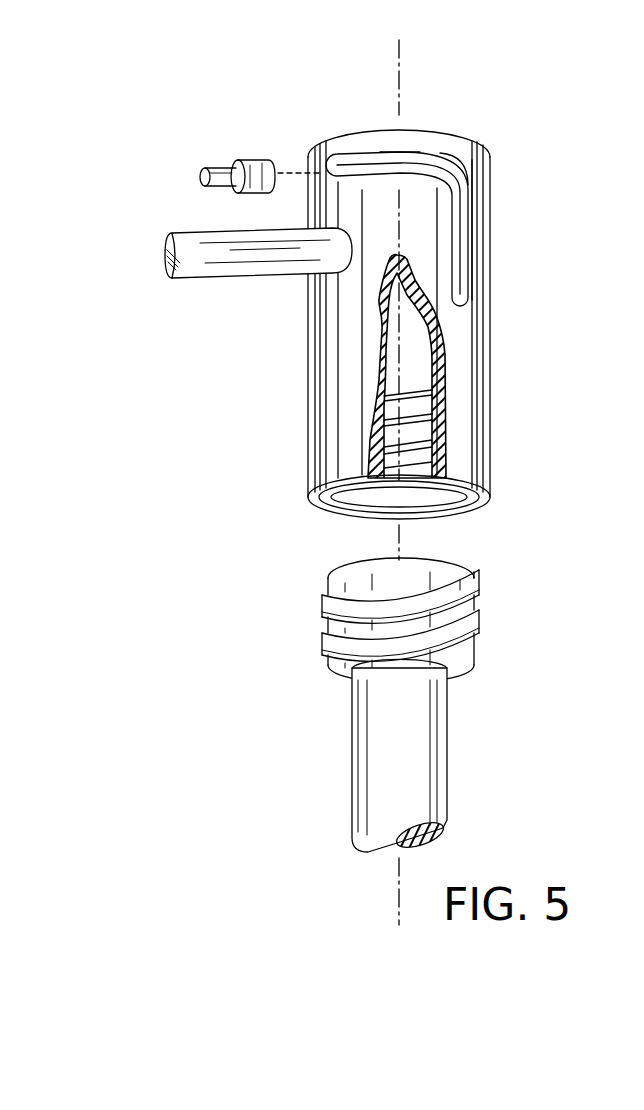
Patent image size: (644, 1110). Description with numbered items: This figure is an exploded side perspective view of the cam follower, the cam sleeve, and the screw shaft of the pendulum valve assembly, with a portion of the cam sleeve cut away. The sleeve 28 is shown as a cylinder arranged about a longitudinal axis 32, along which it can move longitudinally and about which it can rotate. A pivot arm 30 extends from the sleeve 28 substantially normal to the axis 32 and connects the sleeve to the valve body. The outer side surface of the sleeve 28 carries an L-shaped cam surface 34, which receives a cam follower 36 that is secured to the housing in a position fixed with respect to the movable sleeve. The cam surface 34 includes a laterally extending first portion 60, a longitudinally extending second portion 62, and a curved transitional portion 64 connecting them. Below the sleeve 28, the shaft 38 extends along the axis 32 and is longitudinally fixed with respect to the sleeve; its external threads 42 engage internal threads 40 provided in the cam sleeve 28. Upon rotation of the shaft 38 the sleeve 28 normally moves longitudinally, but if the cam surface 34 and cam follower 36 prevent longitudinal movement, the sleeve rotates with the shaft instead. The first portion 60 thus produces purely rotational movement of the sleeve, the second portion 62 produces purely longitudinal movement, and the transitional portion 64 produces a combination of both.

The sleeve 28 is at (320, 413).
The pivot arm 30 is at (248, 275).
The longitudinal axis 32 is at (402, 67).
The cam surface 34 is at (473, 229).
The cam follower 36 is at (257, 160).
The shaft 38 is at (357, 757).
The internal threads 40 is at (428, 508).
The external threads 42 is at (478, 620).
The first portion 60 is at (418, 152).
The second portion 62 is at (470, 286).
The transitional portion 64 is at (470, 162).